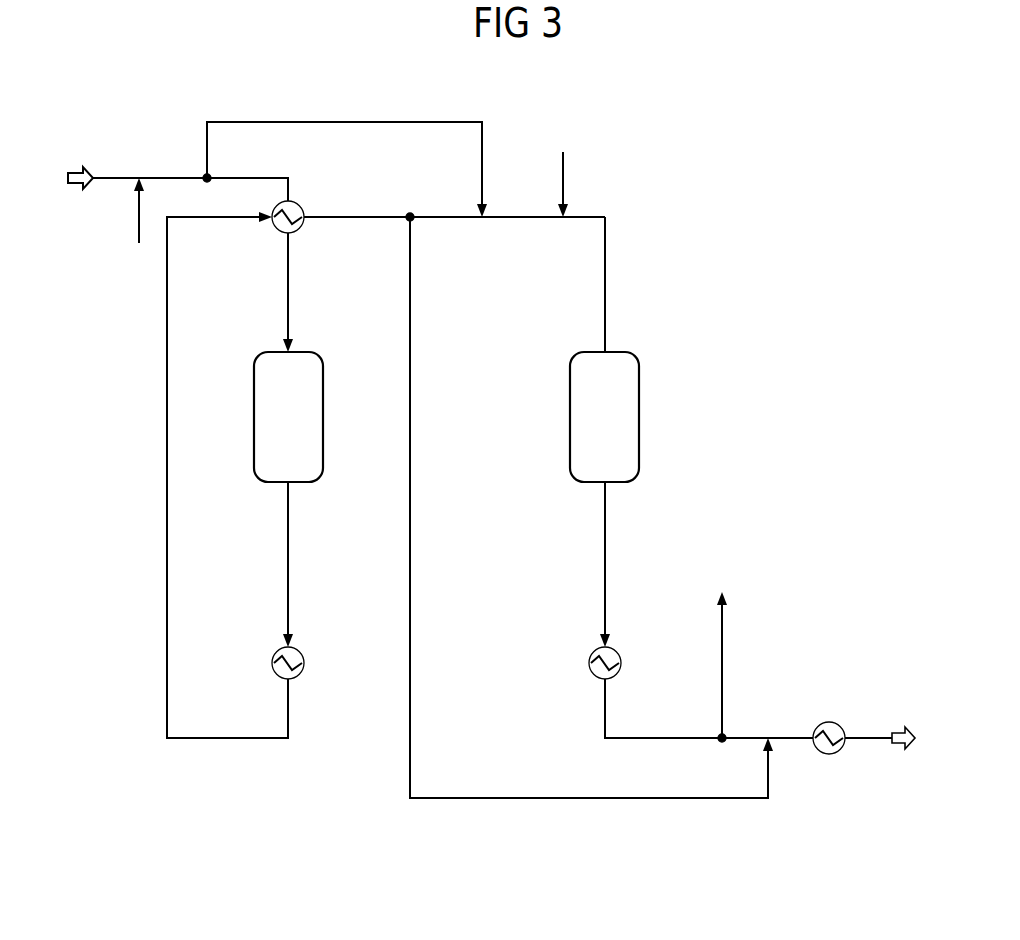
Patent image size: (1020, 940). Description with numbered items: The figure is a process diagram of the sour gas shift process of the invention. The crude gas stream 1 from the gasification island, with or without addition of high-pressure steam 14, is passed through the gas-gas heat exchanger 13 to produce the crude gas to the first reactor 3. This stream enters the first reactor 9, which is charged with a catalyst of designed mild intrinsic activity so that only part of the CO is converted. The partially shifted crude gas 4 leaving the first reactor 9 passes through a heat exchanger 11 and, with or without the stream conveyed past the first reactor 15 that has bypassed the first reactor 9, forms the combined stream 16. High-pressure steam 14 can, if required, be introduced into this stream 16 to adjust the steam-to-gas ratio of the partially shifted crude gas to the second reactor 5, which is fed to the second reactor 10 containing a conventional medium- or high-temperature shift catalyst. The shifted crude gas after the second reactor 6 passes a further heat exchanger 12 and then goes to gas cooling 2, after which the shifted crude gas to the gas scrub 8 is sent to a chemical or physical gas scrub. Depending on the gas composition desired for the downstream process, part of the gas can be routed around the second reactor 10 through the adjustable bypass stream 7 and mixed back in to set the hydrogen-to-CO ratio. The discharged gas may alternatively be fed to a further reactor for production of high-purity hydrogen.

The crude gas stream 1 is at (75, 165).
The gas cooling 2 is at (833, 755).
The crude gas to the first reactor 3 is at (288, 290).
The partially shifted crude gas 4 is at (288, 537).
The partially shifted crude gas to the second reactor 5 is at (605, 282).
The shifted crude gas after the second reactor 6 is at (605, 537).
The bypass stream 7 is at (410, 472).
The shifted crude gas to the gas scrub 8 is at (899, 725).
The first reactor 9 is at (254, 405).
The second reactor 10 is at (570, 404).
The heat exchanger 11 is at (272, 663).
The heat exchanger 12 is at (588, 663).
The gas-gas heat exchanger 13 is at (300, 207).
The high-pressure steam 14 is at (139, 217).
The stream conveyed past the first reactor 15 is at (320, 120).
The partially shifted crude gas and bypass stream 16 is at (512, 218).